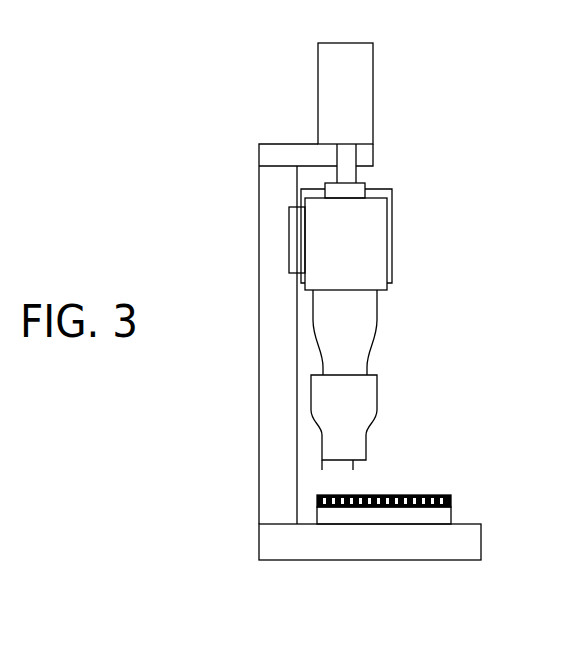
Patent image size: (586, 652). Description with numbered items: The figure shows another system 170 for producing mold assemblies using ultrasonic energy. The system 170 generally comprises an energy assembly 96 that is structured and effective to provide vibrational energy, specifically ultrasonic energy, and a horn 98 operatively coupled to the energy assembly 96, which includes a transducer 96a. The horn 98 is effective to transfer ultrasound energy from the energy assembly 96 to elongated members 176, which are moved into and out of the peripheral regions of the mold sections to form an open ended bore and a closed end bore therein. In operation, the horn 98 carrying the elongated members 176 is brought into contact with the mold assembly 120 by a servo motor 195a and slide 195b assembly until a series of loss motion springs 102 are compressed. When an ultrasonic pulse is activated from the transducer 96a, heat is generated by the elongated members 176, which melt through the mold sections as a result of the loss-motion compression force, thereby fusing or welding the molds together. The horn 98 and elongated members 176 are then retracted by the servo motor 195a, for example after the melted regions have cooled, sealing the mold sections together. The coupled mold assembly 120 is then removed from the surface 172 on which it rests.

The system 170 is at (447, 124).
The servo motor 195a is at (366, 66).
The loss motion springs 102 is at (358, 188).
The energy assembly 96 is at (416, 312).
The transducer 96a is at (372, 253).
The slide 195b is at (290, 233).
The horn 98 is at (376, 419).
The elongated members 176 is at (323, 466).
The mold assembly 120 is at (418, 493).
The surface 172 is at (407, 515).